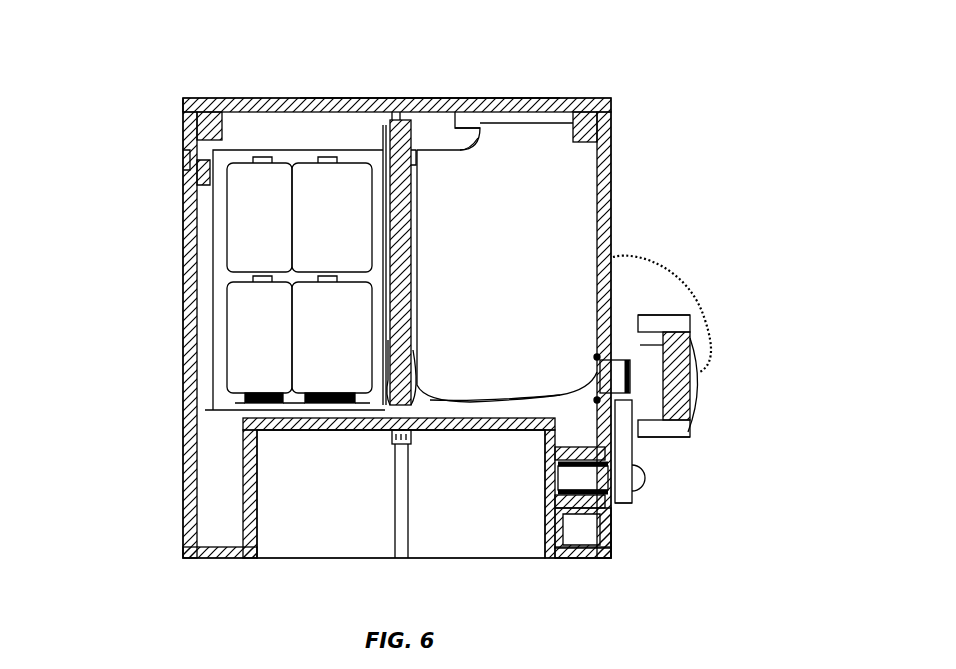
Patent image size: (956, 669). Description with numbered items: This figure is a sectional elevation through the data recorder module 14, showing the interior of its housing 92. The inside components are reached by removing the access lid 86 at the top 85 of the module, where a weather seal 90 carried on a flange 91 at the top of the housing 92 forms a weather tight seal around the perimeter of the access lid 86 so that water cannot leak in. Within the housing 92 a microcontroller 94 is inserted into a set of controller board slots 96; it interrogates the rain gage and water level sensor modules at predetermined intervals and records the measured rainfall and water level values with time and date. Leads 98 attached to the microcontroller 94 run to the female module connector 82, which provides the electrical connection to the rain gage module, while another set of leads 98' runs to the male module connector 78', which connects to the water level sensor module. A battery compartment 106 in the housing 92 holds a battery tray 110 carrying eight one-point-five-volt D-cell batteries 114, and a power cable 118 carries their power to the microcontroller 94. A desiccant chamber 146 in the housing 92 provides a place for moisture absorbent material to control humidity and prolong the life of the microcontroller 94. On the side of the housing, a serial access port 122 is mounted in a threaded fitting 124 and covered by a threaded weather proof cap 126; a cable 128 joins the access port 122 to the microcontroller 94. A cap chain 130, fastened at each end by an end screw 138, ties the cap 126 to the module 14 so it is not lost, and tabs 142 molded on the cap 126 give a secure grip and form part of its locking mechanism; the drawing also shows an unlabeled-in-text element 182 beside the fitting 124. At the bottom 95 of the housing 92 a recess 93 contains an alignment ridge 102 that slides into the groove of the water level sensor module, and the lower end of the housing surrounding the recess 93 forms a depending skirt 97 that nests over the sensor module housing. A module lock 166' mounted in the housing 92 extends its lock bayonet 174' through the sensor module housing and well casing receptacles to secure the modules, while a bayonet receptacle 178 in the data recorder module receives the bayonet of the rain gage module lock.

The data recorder module 14 is at (156, 321).
The female module connector 82 is at (500, 97).
The access lid 86 is at (412, 100).
The top of the data recorder module 85 is at (183, 100).
The weather seal 90 is at (185, 122).
The housing 92 is at (185, 235).
The bayonet receptacle 178 is at (186, 167).
The flange 91 is at (612, 160).
The depending skirt 97 is at (162, 541).
The bottom of the housing 95 is at (562, 558).
The controller board slots 96 is at (390, 140).
The microcontroller 94 is at (392, 125).
The battery compartment 106 is at (318, 148).
The D-cell batteries 114 is at (346, 350).
The battery tray 110 is at (222, 403).
The desiccant chamber 146 is at (528, 258).
The leads 98 is at (503, 161).
The cable 128 is at (545, 395).
The RS-232 access port 122 is at (602, 377).
The power cable 118 is at (352, 440).
The male module connector 78' is at (341, 483).
The alignment ridge 102 is at (400, 546).
The leads 98' is at (401, 448).
The lock bayonet 174' is at (516, 477).
The recess 93 is at (552, 516).
The threaded fitting 124 is at (625, 420).
The pivot 182 is at (640, 492).
The module lock 166' is at (702, 560).
The end screw 138 is at (620, 252).
The cap chain 130 is at (682, 302).
The tabs 142 is at (682, 331).
The threaded weather proof cap 126 is at (692, 395).